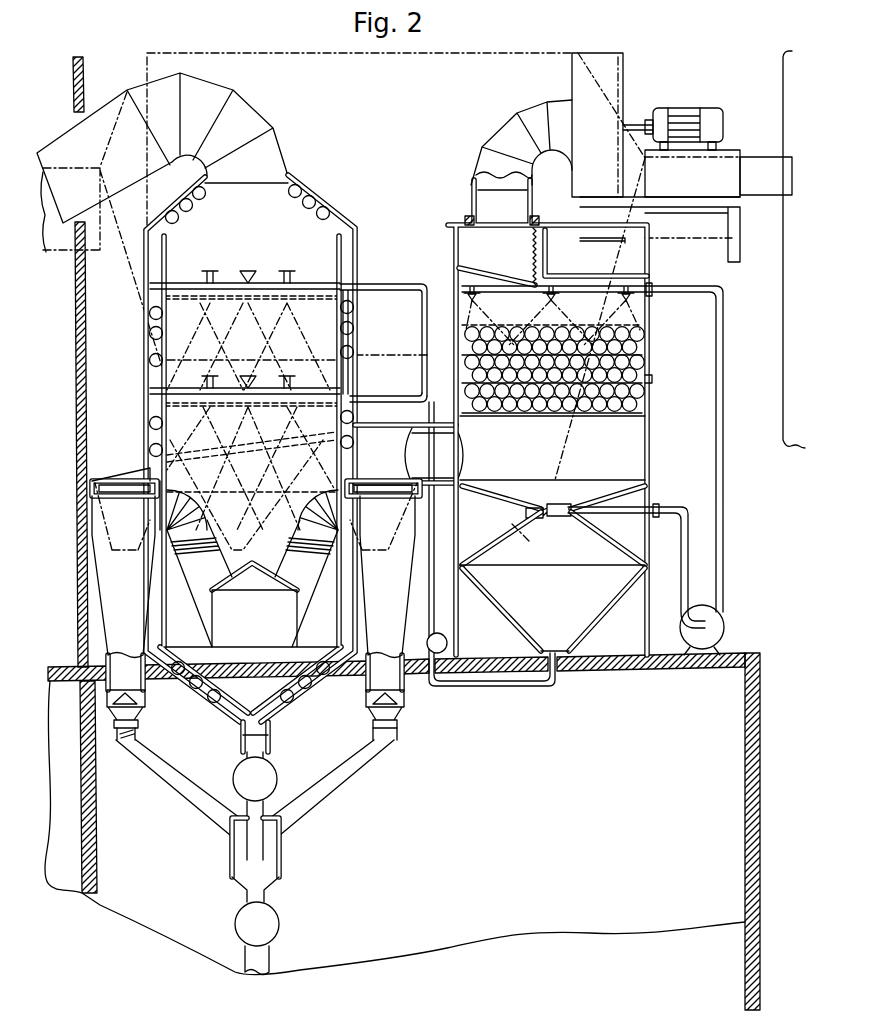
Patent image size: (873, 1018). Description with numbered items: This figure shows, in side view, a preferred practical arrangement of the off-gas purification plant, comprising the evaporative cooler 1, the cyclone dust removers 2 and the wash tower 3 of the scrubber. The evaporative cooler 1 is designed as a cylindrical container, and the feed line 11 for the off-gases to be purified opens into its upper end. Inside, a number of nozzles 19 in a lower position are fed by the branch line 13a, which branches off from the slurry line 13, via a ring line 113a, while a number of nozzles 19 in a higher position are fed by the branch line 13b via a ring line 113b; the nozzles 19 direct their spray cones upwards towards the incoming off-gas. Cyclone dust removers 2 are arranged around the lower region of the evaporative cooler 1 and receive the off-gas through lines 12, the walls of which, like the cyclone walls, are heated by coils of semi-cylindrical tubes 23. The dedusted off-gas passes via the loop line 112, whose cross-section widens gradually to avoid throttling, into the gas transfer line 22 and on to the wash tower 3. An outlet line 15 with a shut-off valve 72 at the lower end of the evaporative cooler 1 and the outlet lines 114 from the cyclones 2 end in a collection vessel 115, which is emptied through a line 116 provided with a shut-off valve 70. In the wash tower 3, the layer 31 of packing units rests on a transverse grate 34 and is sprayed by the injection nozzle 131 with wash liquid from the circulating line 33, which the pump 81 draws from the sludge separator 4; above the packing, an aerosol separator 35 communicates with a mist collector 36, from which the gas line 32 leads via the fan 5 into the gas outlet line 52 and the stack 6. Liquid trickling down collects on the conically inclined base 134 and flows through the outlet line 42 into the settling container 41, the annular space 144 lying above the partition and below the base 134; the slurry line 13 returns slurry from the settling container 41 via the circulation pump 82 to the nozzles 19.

The evaporative cooler 1 is at (340, 190).
The cyclone dust remover 2 is at (256, 604).
The wash tower 3 is at (458, 206).
The sludge separator 4 is at (553, 609).
The fan 5 is at (625, 80).
The stack 6 is at (783, 318).
The off-gas feed line 11 is at (255, 114).
The off-gas line 12 is at (212, 567).
The slurry line 13 is at (434, 590).
The branch line 13a is at (393, 396).
The branch line 13b is at (392, 290).
The outlet line 15 is at (271, 748).
The nozzle 19 is at (282, 268).
The gas transfer line 22 is at (440, 476).
The semi-cylindrical tubes 23 is at (150, 336).
The layer of packing units 31 is at (648, 347).
The gas line 32 is at (507, 135).
The liquid circulating line 33 is at (716, 446).
The transverse grate 34 is at (547, 417).
The aerosol separator 35 is at (596, 253).
The mist collector 36 is at (531, 264).
The settling container 41 is at (556, 616).
The outlet line 42 is at (562, 504).
The gas outlet line 52 is at (763, 160).
The shut-off valve 70 is at (236, 923).
The shut-off valve 72 is at (233, 781).
The pump 81 is at (717, 626).
The circulation pump 82 is at (438, 632).
The loop line 112 is at (150, 470).
The ring line 113a is at (150, 390).
The ring line 113b is at (150, 283).
The outlet line 114 is at (148, 756).
The collection vessel 115 is at (280, 857).
The line 116 is at (271, 960).
The injection nozzle 131 is at (547, 297).
The base 134 is at (507, 490).
The annular space 144 is at (552, 538).